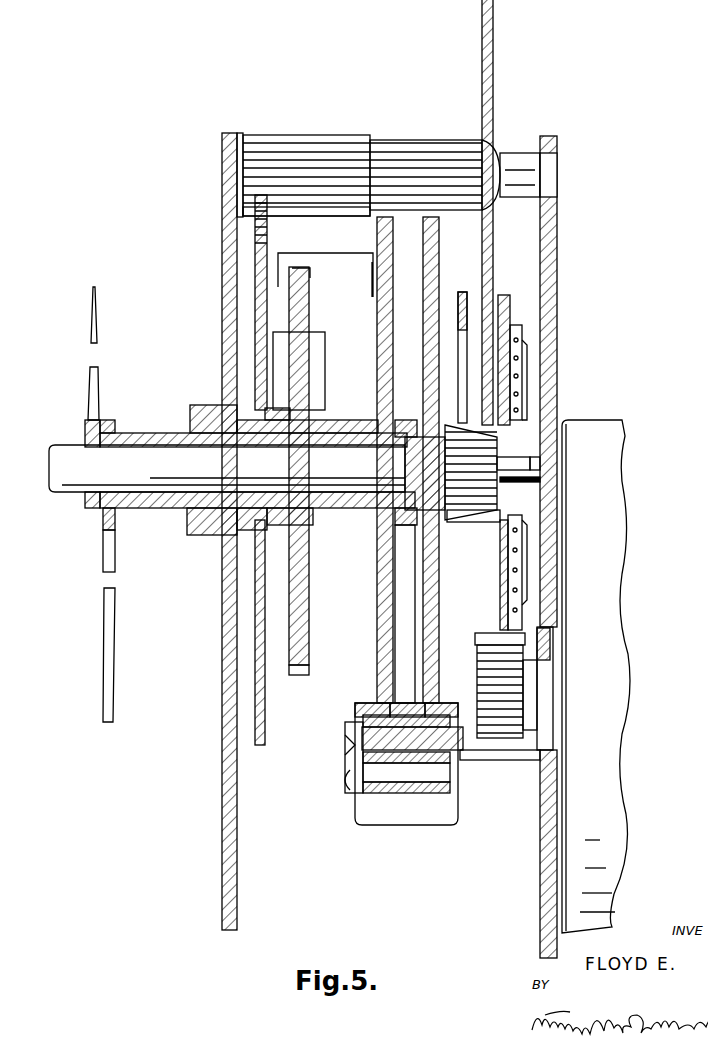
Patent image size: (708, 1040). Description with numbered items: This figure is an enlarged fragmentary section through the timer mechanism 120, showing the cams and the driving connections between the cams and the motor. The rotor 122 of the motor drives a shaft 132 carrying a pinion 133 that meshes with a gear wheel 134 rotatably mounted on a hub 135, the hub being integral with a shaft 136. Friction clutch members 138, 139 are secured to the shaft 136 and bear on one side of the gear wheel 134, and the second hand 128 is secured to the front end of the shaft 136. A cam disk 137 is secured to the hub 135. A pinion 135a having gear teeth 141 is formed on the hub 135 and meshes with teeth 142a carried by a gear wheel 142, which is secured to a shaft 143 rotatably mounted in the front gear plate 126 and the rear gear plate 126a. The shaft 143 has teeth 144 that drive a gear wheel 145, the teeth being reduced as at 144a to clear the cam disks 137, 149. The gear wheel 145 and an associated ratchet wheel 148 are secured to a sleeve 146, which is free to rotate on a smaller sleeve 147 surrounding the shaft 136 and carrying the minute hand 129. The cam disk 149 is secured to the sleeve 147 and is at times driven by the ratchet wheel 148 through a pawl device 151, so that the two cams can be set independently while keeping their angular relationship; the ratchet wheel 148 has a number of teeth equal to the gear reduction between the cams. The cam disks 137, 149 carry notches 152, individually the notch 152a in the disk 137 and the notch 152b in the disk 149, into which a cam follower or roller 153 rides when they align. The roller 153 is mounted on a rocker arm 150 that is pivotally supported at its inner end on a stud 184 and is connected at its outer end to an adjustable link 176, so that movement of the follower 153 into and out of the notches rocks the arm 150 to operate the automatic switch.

The timer mechanism 120 is at (380, 832).
The rotor unit 122 is at (610, 624).
The front gear plate 126 is at (222, 632).
The rear gear plate 126a is at (540, 877).
The second hand 128 is at (95, 318).
The minute hand 129 is at (112, 690).
The shaft 132 is at (525, 691).
The pinion 133 is at (478, 640).
The gear wheel 134 is at (505, 560).
The hub 135 is at (492, 440).
The pinion 135a is at (410, 452).
The shaft 136 is at (70, 445).
The cam disk 137 is at (430, 596).
The friction clutch member 138 is at (515, 575).
The friction clutch member 139 is at (512, 352).
The gear teeth 141 is at (480, 522).
The gear wheel 142 is at (470, 270).
The teeth 142a is at (548, 479).
The shaft 143 is at (518, 159).
The teeth 144 is at (290, 215).
The reduced portion of teeth 144a is at (426, 144).
The gear wheel 145 is at (255, 217).
The sleeve 146 is at (278, 528).
The smaller sleeve 147 is at (141, 433).
The ratchet wheel 148 is at (309, 580).
The cam disk 149 is at (380, 622).
The rocker arm 150 is at (453, 791).
The pawl device 151 is at (315, 275).
The notches 152 is at (414, 688).
The notch 152a is at (436, 707).
The notch 152b is at (374, 706).
The cam follower 153 is at (445, 762).
The adjustable link 176 is at (484, 283).
The stud 184 is at (520, 752).